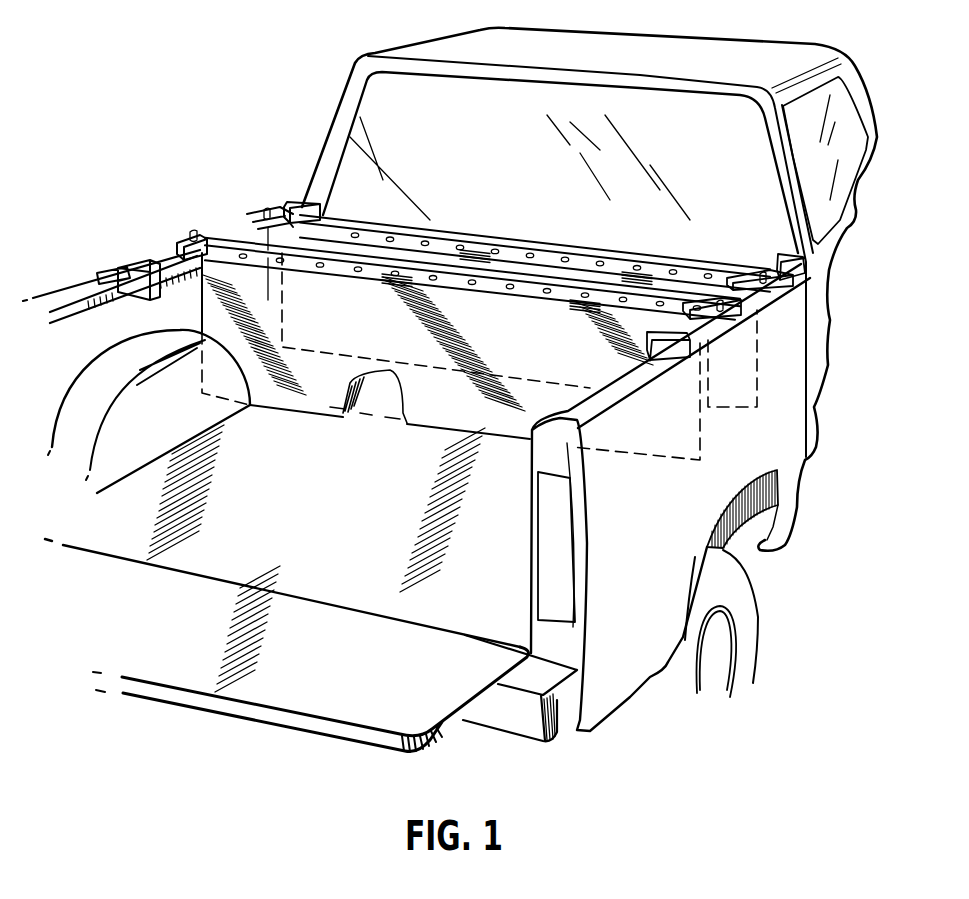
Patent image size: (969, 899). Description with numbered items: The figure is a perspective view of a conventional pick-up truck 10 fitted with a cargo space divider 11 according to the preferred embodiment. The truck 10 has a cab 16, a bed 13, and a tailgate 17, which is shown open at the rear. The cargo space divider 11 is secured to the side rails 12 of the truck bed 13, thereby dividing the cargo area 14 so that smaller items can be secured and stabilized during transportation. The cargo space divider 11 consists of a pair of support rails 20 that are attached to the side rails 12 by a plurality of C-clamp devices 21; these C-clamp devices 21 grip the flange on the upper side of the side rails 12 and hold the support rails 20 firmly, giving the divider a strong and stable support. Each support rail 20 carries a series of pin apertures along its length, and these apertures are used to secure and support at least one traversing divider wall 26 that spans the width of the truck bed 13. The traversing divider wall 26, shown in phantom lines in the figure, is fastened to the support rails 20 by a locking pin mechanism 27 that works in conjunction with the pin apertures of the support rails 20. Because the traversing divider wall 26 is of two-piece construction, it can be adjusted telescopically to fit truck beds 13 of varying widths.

The pick-up truck 10 is at (176, 78).
The cargo space divider 11 is at (317, 461).
The side rails 12 is at (80, 291).
The bed 13 is at (500, 580).
The cargo area 14 is at (344, 515).
The cab 16 is at (333, 129).
The tailgate 17 is at (430, 747).
The support rails 20 is at (177, 252).
The C-clamp devices 21 is at (129, 260).
The traversing divider wall 26 is at (358, 326).
The locking pin mechanism 27 is at (715, 302).